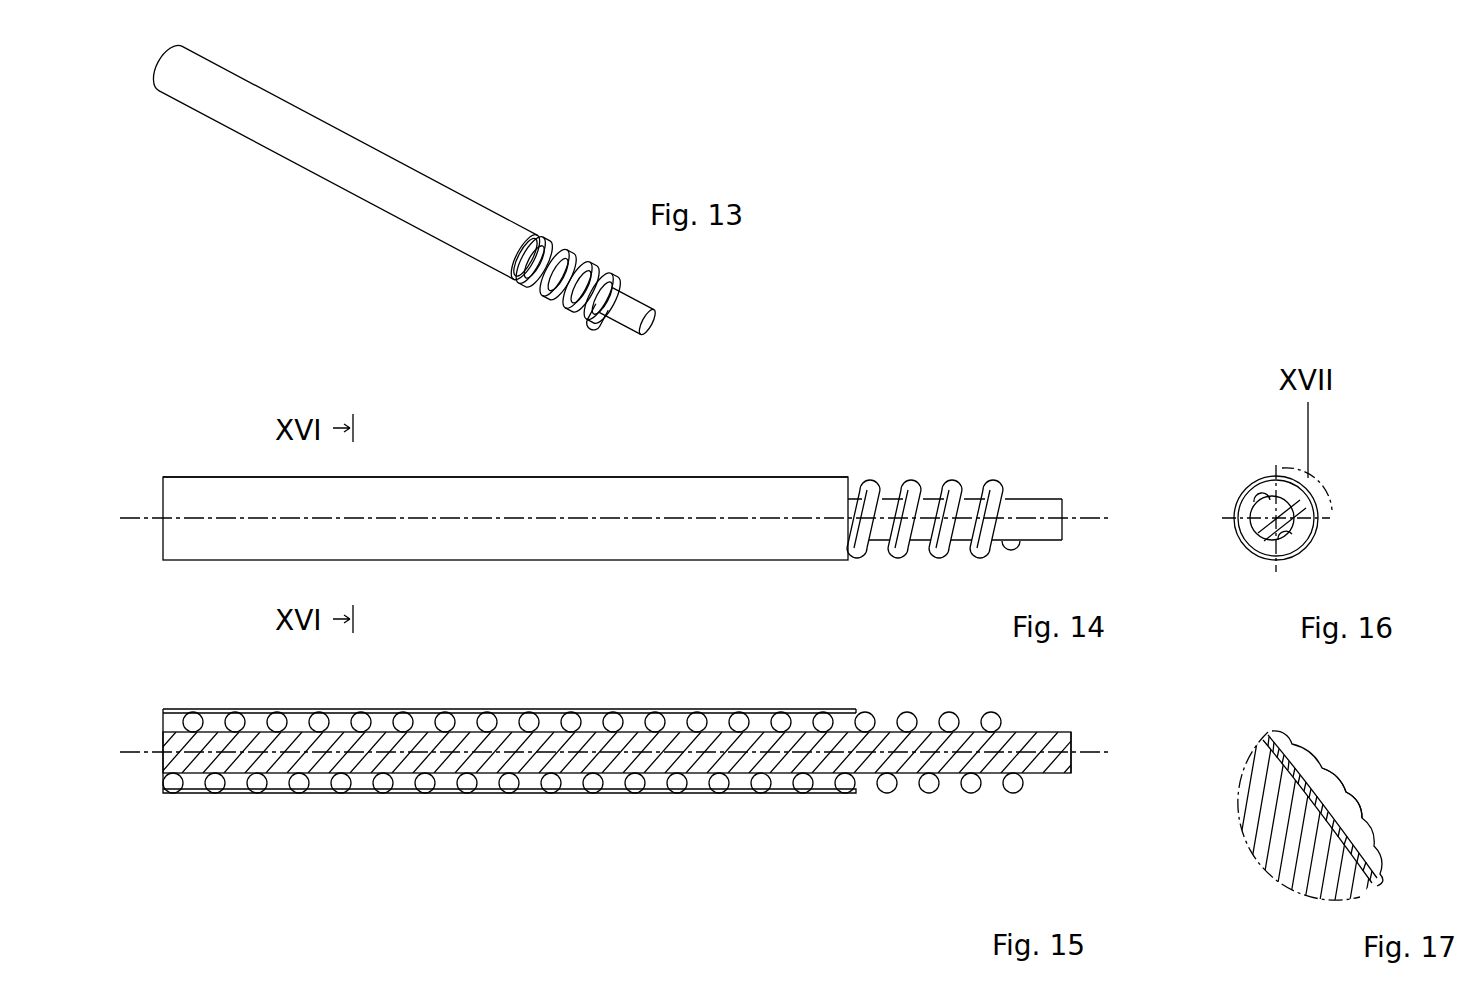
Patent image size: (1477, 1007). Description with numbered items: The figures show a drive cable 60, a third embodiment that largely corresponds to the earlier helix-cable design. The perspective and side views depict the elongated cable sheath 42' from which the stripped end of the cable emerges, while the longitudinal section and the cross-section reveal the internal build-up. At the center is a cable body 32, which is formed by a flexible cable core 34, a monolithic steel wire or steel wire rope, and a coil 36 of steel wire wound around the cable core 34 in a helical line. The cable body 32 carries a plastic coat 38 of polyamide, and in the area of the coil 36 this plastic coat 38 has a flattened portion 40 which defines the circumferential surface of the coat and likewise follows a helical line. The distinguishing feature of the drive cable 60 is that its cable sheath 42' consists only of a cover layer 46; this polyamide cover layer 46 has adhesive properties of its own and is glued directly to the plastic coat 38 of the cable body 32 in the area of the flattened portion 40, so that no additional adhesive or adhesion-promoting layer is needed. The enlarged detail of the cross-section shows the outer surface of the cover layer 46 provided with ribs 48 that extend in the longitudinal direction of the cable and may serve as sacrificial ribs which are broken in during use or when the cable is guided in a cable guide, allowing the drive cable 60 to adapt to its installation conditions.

In FIG. 13, the drive cable 60 is at (405, 197).
In FIG. 13, the cable sheath 42' is at (350, 162).
In FIG. 14, the cable sheath 42' is at (505, 458).
In FIG. 15, the cable sheath 42' is at (509, 707).
In FIG. 16, the cable sheath 42' is at (1269, 551).
In FIG. 14, the cover layer 46 is at (732, 477).
In FIG. 15, the cover layer 46 is at (743, 709).
In FIG. 17, the cover layer 46 is at (1278, 735).
In FIG. 14, the flattened portion 40 is at (911, 488).
In FIG. 15, the flattened portion 40 is at (908, 712).
In FIG. 14, the coil 36 is at (985, 490).
In FIG. 15, the coil 36 is at (987, 714).
In FIG. 17, the coil 36 is at (1302, 857).
In FIG. 14, the plastic coat 38 is at (960, 553).
In FIG. 15, the plastic coat 38 is at (957, 775).
In FIG. 17, the plastic coat 38 is at (1268, 745).
In FIG. 14, the cable core 34 is at (1052, 513).
In FIG. 15, the cable core 34 is at (1060, 747).
In FIG. 14, the cable body 32 is at (1077, 494).
In FIG. 15, the cable body 32 is at (1069, 793).
In FIG. 16, the cable body 32 is at (1267, 506).
In FIG. 17, the ribs 48 is at (1343, 790).